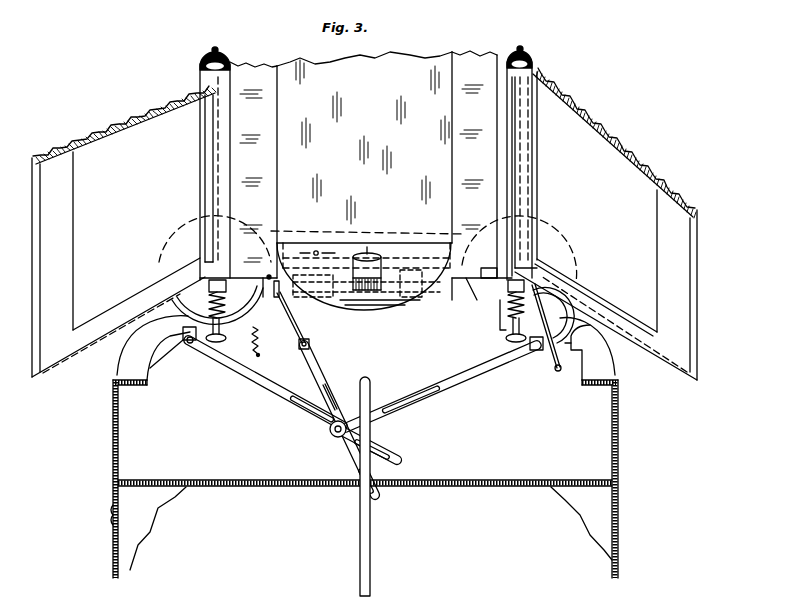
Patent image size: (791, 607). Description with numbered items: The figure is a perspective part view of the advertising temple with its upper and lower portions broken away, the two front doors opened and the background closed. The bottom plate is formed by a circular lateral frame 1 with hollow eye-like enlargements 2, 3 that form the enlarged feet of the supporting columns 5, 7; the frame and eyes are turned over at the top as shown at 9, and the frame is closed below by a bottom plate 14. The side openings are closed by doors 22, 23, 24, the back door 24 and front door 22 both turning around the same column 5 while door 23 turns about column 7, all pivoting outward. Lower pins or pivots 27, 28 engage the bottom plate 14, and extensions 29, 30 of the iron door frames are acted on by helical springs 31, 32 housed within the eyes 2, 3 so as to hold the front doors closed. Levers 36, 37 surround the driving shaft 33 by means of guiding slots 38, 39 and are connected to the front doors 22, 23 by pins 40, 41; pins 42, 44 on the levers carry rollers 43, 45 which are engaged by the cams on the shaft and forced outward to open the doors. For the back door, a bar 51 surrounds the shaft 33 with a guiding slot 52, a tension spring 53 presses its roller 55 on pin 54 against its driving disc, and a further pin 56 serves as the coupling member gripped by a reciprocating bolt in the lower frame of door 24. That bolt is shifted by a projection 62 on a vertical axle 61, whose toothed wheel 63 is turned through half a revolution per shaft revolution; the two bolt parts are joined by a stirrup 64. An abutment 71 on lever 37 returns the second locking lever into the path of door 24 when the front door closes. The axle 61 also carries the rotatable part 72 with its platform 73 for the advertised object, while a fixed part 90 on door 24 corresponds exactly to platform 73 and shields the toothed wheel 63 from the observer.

The lateral frame 1 is at (113, 450).
The eye-like enlargement 2 is at (187, 226).
The eye-like enlargement 3 is at (550, 223).
The supporting column 5 is at (215, 156).
The supporting column 7 is at (519, 152).
The turned-over top 9 is at (134, 383).
The bottom plate 14 is at (220, 487).
The front door 22 is at (125, 227).
The front door 23 is at (604, 224).
The back door 24 is at (238, 170).
The lower pin or pivot 27 is at (203, 348).
The lower pin or pivot 28 is at (533, 284).
The extension of iron frame 29 is at (232, 251).
The extension of iron frame 30 is at (563, 272).
The helical spring 31 is at (223, 331).
The helical spring 32 is at (507, 312).
The driving shaft 33 is at (360, 523).
The lever 36 is at (266, 387).
The lever 37 is at (493, 372).
The guiding slot 38 is at (310, 415).
The guiding slot 39 is at (423, 398).
The pin 40 is at (173, 293).
The pin 41 is at (567, 287).
The pin 42 is at (183, 331).
The roller 43 is at (176, 344).
The pin 44 is at (529, 344).
The roller 45 is at (555, 366).
The bar 51 is at (323, 381).
The guiding slot 52 is at (354, 453).
The tension spring 53 is at (265, 341).
The pin 54 is at (311, 344).
The roller 55 is at (301, 351).
The pin 56 is at (281, 292).
The vertical axle 61 is at (373, 252).
The projection 62 is at (402, 240).
The toothed wheel 63 is at (404, 293).
The stirrup 64 is at (377, 303).
The abutment 71 is at (563, 320).
The rotatable part 72 is at (364, 147).
The platform 73 is at (345, 256).
The fixed part 90 is at (400, 307).